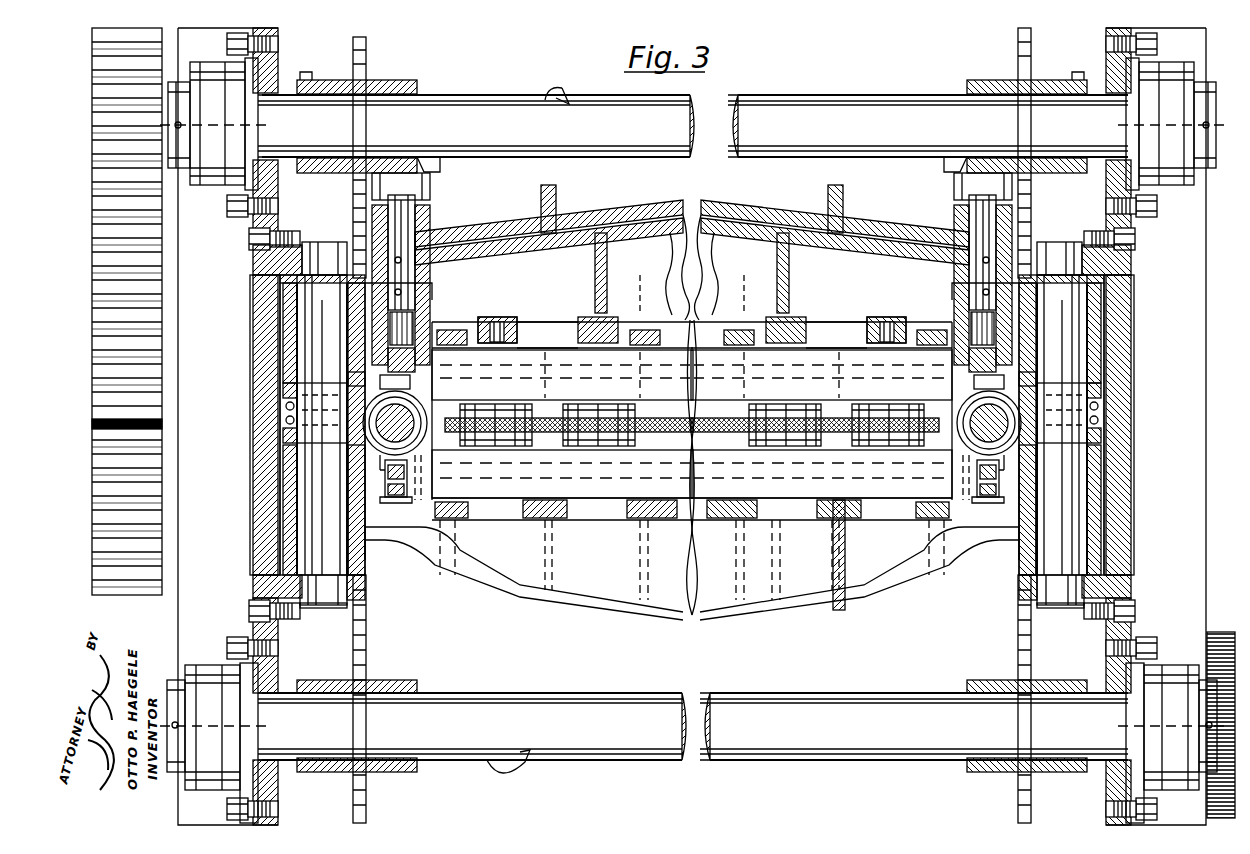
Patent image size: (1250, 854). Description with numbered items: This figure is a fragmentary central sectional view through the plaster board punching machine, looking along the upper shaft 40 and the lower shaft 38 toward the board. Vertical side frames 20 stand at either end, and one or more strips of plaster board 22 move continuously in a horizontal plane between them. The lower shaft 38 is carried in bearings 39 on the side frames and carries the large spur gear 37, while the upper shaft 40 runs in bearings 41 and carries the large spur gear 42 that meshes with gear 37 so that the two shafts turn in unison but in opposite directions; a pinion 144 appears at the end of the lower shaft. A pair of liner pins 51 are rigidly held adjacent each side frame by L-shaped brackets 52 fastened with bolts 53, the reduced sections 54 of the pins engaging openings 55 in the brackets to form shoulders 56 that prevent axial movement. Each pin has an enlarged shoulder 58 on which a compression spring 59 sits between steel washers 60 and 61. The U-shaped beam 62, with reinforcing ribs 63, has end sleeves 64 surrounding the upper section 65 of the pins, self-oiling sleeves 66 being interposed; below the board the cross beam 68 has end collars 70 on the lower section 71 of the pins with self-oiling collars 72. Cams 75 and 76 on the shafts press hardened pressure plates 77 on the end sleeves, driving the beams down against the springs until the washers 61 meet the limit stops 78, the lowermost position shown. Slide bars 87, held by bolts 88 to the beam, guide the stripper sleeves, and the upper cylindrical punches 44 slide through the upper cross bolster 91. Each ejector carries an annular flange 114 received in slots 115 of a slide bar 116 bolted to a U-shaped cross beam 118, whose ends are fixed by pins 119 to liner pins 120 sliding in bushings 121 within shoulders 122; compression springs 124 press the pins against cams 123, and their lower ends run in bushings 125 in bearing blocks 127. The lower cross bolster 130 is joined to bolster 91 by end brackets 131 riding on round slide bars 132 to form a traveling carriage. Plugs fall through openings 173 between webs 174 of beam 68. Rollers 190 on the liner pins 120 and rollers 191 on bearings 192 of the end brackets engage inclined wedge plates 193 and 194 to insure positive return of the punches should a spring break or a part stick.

The side frames 20 is at (178, 620).
The plaster board 22 is at (676, 408).
The spur gear 37 is at (92, 500).
The shaft 38 is at (618, 695).
The bearings 39 is at (200, 678).
The shaft 40 is at (838, 105).
The bearings 41 is at (215, 186).
The spur gear 42 is at (92, 215).
The upper cylindrical punches 44 is at (500, 410).
The liner pins 51 is at (320, 520).
The L-shaped brackets 52 is at (286, 245).
The bolts 53 is at (236, 611).
The reduced sections 54 is at (322, 250).
The openings 55 is at (350, 602).
The shoulders 56 is at (350, 601).
The enlarged shoulder 58 is at (290, 440).
The compression spring 59 is at (290, 425).
The steel washer 60 is at (285, 455).
The steel washer 61 is at (300, 398).
The U-shaped beam 62 is at (472, 236).
The reinforcing ribs 63 is at (553, 200).
The end sleeves 64 is at (268, 310).
The upper section 65 is at (280, 330).
The self-oiling sleeves 66 is at (290, 300).
The cross beam 68 is at (560, 605).
The end collars 70 is at (350, 500).
The lower section 71 is at (312, 545).
The self-oiling collars 72 is at (283, 480).
The cam 75 is at (1031, 204).
The cam 76 is at (353, 195).
The hardened pressure plates 77 is at (300, 279).
The limit stops 78 is at (292, 410).
The slide bars 87 is at (598, 300).
The bolts 88 is at (686, 290).
The upper cross bolster 91 is at (655, 375).
The annular flange 114 is at (507, 325).
The slots 115 is at (548, 330).
The slide bar 116 is at (497, 318).
The U-shaped cross beam 118 is at (690, 230).
The pins 119 is at (424, 240).
The liner pins 120 is at (432, 166).
The bushings 121 is at (408, 186).
The shoulders 122 is at (402, 200).
The cams 123 is at (408, 260).
The compression springs 124 is at (388, 300).
The bushings 125 is at (352, 375).
The bearing blocks 127 is at (300, 395).
The cross bolster 130 is at (672, 466).
The end brackets 131 is at (419, 501).
The round slide bar 132 is at (420, 410).
The pinion 144 is at (1220, 633).
The openings 173 is at (777, 600).
The webs 174 is at (840, 611).
The rollers 190 is at (415, 355).
The rollers 191 is at (395, 498).
The bearings 192 is at (992, 492).
The inclined wedge plates 193 is at (393, 505).
The inclined wedge shaped plates 194 is at (408, 385).